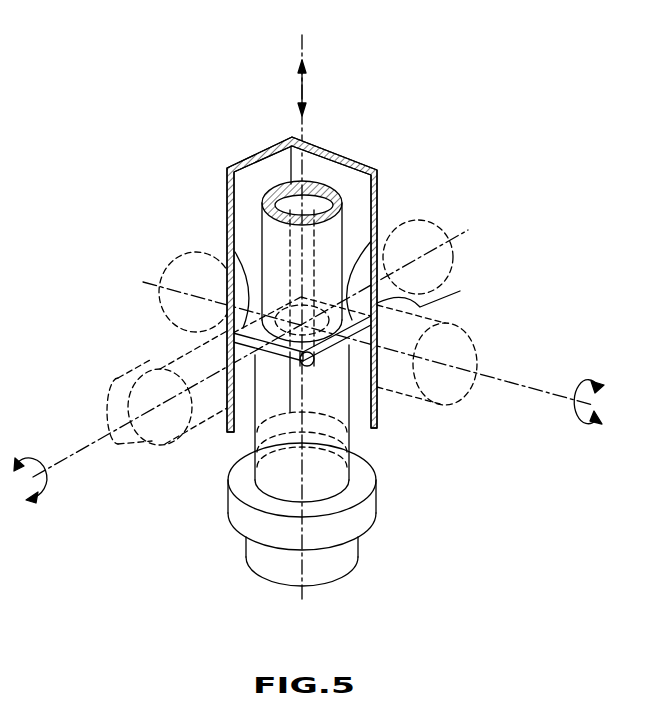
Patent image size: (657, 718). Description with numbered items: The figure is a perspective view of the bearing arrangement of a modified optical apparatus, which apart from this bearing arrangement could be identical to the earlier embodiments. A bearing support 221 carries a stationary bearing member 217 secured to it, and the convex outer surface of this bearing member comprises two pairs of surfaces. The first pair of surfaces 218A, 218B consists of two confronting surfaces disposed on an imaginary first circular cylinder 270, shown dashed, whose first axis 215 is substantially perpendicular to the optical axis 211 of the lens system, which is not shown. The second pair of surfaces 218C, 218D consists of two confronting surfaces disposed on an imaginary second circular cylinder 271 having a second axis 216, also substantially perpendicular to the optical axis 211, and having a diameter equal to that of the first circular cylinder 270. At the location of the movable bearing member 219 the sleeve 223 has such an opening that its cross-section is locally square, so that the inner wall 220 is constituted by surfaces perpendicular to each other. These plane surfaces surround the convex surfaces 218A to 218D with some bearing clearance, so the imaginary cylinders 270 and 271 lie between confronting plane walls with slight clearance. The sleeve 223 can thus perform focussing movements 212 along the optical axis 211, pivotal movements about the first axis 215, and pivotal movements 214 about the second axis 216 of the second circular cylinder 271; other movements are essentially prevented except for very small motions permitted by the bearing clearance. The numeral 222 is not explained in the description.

The optical axis 211 is at (305, 43).
The focussing movements 212 is at (305, 92).
The pivotal movements 214 is at (578, 424).
The first axis 215 is at (485, 378).
The second axis 216 is at (113, 432).
The stationary bearing member 217 is at (434, 291).
The first pair surface 218A is at (227, 405).
The first pair surface 218B is at (297, 280).
The second pair surface 218C is at (228, 245).
The second pair surface 218D is at (345, 357).
The movable bearing member 219 is at (227, 308).
The inner wall 220 is at (343, 178).
The bearing support 221 is at (360, 476).
The inner cylinder 222 is at (302, 265).
The sleeve 223 is at (377, 192).
The first circular cylinder 270 is at (470, 326).
The second circular cylinder 271 is at (152, 388).